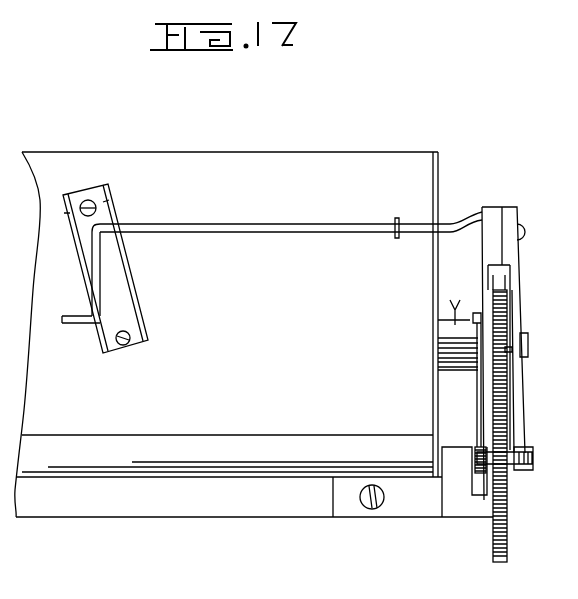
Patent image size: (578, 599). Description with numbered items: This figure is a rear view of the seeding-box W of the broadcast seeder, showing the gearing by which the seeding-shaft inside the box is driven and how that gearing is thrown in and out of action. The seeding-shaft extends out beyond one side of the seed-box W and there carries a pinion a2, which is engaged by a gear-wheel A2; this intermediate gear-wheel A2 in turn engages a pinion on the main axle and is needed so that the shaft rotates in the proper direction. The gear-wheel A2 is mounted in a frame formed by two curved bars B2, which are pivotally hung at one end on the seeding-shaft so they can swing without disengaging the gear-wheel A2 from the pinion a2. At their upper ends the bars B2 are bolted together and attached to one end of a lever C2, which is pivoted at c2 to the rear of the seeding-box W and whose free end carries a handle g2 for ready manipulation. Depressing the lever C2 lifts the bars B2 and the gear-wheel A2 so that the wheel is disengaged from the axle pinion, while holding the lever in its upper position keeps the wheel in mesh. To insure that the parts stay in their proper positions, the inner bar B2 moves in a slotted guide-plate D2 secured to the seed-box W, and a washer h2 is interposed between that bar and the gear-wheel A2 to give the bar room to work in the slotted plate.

The seed-box W is at (254, 334).
The slotted guide-plate D2 is at (275, 350).
The lever C2 is at (287, 258).
The handle g2 is at (76, 333).
The pivot c2 is at (401, 216).
The curved bars B2 is at (537, 388).
The pinion a2 is at (508, 303).
The gear-wheel A2 is at (508, 517).
The washer h2 is at (478, 447).